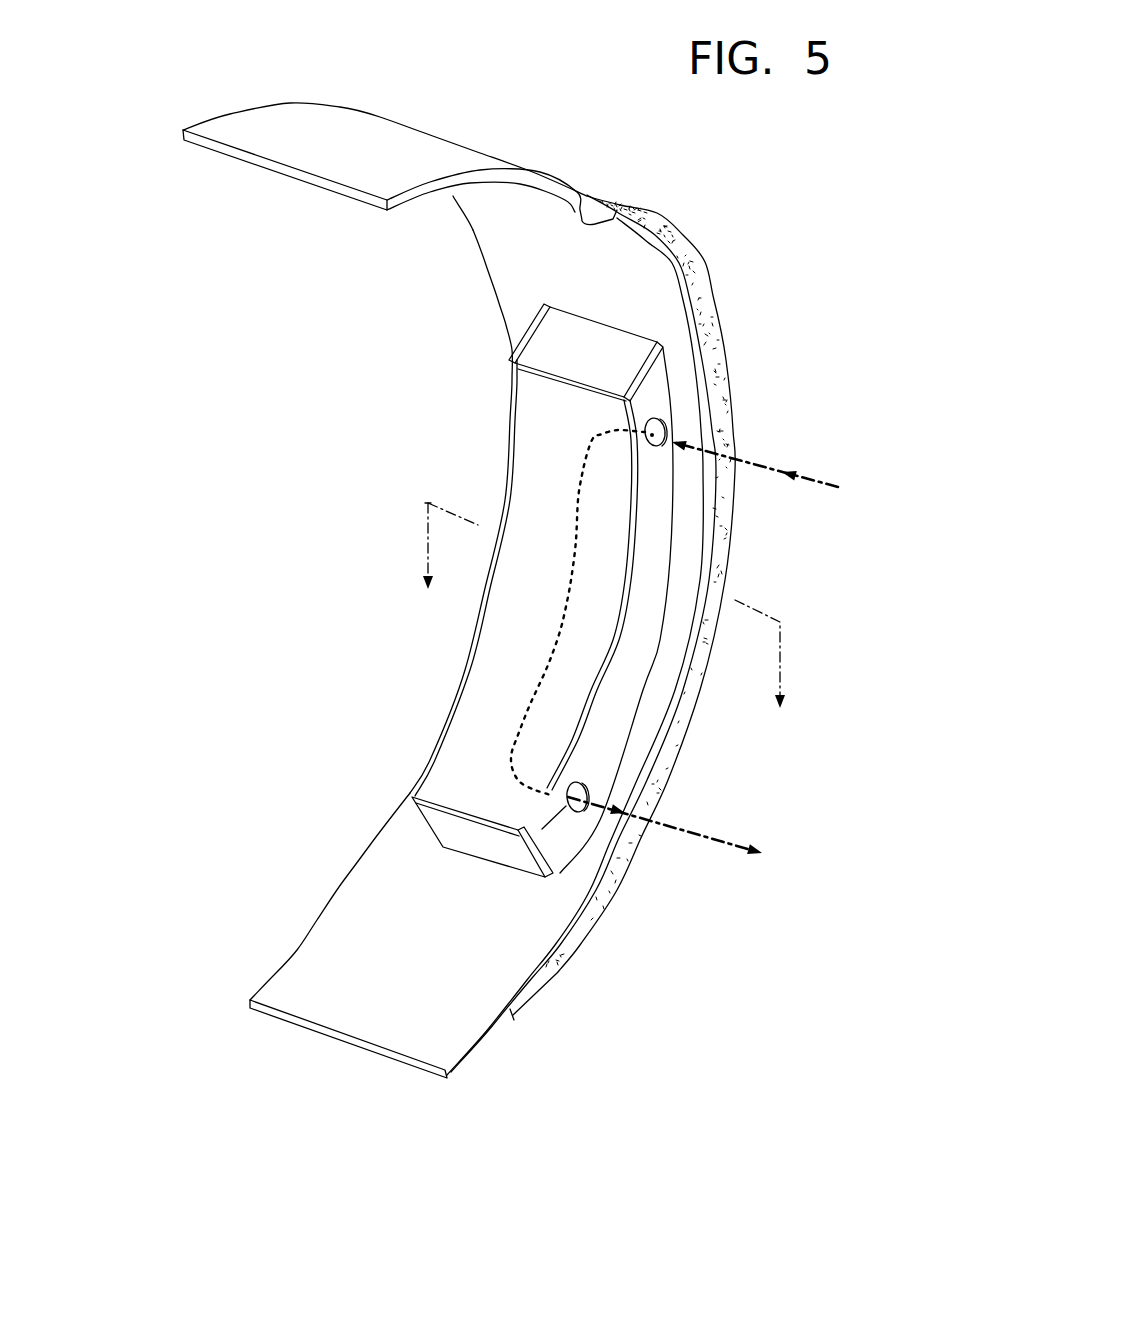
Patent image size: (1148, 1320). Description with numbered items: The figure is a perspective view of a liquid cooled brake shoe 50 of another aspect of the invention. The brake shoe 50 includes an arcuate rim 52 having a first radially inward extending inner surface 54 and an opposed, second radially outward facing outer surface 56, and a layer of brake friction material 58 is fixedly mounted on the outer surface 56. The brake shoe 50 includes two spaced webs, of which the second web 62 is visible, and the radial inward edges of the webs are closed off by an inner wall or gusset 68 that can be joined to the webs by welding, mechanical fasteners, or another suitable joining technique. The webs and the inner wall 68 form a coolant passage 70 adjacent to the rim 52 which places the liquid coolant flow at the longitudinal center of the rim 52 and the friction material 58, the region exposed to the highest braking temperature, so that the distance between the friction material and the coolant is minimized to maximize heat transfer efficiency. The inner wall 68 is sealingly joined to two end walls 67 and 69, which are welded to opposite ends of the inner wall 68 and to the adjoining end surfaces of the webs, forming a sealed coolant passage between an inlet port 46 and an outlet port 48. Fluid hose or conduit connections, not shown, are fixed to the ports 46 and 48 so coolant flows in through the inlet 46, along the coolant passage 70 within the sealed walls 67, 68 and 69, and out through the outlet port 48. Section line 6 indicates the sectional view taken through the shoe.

The inlet port 46 is at (668, 432).
The outlet port 48 is at (590, 800).
The brake shoe 50 is at (186, 167).
The arcuate rim 52 is at (183, 130).
The inner surface 54 is at (643, 268).
The outer surface 56 is at (348, 162).
The layer of brake friction material 58 is at (712, 318).
The second web 62 is at (650, 537).
The end wall 67 is at (572, 357).
The inner wall 68 is at (500, 690).
The end wall 69 is at (458, 825).
The coolant passage 70 is at (836, 481).
The section line 6- 6 is at (603, 605).